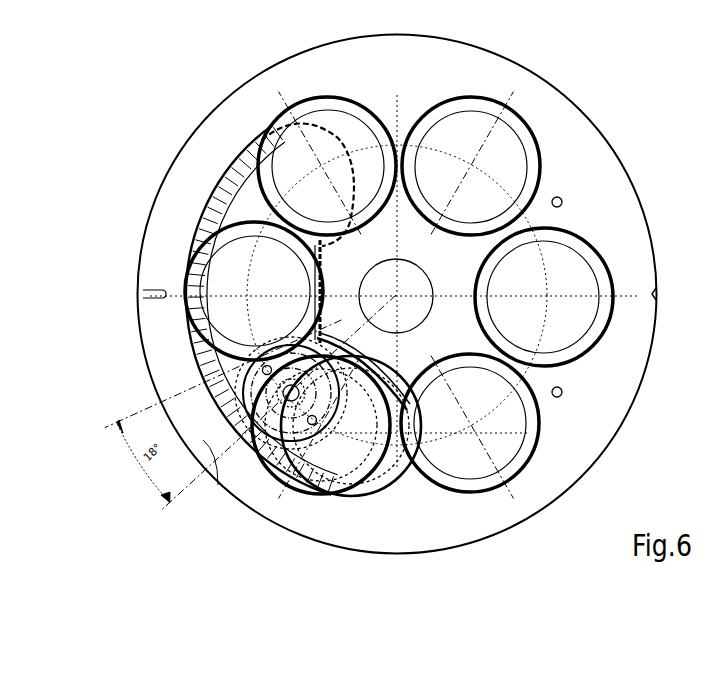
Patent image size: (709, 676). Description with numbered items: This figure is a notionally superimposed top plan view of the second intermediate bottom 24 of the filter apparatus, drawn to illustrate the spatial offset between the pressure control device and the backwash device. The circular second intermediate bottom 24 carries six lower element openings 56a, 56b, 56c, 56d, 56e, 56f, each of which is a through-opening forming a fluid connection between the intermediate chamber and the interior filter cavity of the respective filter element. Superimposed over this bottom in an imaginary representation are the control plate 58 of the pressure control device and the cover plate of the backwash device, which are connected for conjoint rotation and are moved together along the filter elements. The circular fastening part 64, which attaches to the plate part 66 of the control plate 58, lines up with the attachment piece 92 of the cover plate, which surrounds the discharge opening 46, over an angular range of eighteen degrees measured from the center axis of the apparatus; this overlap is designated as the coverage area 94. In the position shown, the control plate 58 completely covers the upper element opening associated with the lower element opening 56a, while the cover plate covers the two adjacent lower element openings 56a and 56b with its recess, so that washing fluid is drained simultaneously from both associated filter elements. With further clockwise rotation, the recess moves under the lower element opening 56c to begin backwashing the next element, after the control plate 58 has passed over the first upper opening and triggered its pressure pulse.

The second intermediate bottom 24 is at (477, 67).
The lower element opening 56a is at (337, 475).
The lower element opening 56b is at (232, 272).
The lower element opening 56c is at (336, 98).
The lower element opening 56d is at (505, 150).
The lower element opening 56e is at (563, 258).
The lower element opening 56f is at (510, 430).
The discharge opening 46 is at (280, 350).
The control plate 58 is at (387, 496).
The circular fastening part 64 is at (345, 341).
The plate part 66 is at (404, 380).
The attachment piece 92 is at (197, 350).
The coverage area 94 is at (218, 485).